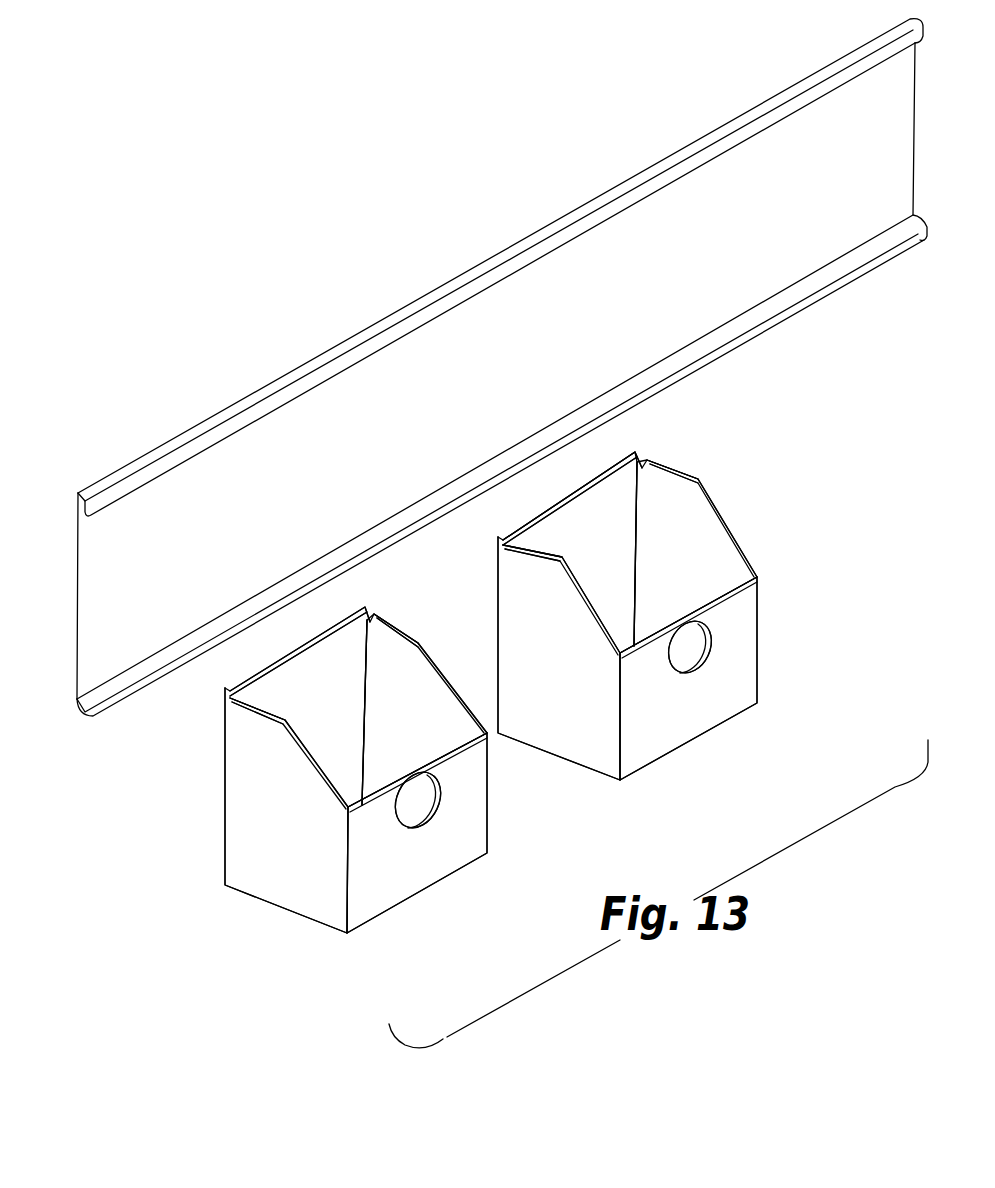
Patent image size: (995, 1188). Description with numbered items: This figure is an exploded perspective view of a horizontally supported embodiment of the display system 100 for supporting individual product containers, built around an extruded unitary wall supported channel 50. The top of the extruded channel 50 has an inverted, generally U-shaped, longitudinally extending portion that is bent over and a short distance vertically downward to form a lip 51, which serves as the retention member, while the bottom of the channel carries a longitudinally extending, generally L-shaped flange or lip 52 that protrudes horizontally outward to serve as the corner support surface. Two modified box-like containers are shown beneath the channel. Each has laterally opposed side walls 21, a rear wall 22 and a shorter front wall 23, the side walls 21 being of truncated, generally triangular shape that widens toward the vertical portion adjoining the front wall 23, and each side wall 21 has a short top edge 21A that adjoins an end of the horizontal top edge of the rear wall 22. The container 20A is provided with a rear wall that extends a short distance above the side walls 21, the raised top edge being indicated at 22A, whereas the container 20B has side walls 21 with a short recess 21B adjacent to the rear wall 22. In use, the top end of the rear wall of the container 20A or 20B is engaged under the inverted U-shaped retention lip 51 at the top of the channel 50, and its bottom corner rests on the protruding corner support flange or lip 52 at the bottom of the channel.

The channel assembly 100 is at (502, 367).
The extruded unitary wall supported channel 50 is at (513, 374).
The lip 51 is at (548, 243).
The flange or lip 52 is at (696, 357).
The modified product container 20A is at (292, 925).
The container 20B is at (778, 648).
The side wall 21 is at (567, 685).
The short top edge 21A is at (540, 553).
The short recess 21B is at (508, 537).
The rear wall 22 is at (610, 556).
The back wall flange 22A is at (338, 710).
The front wall 23 is at (703, 714).